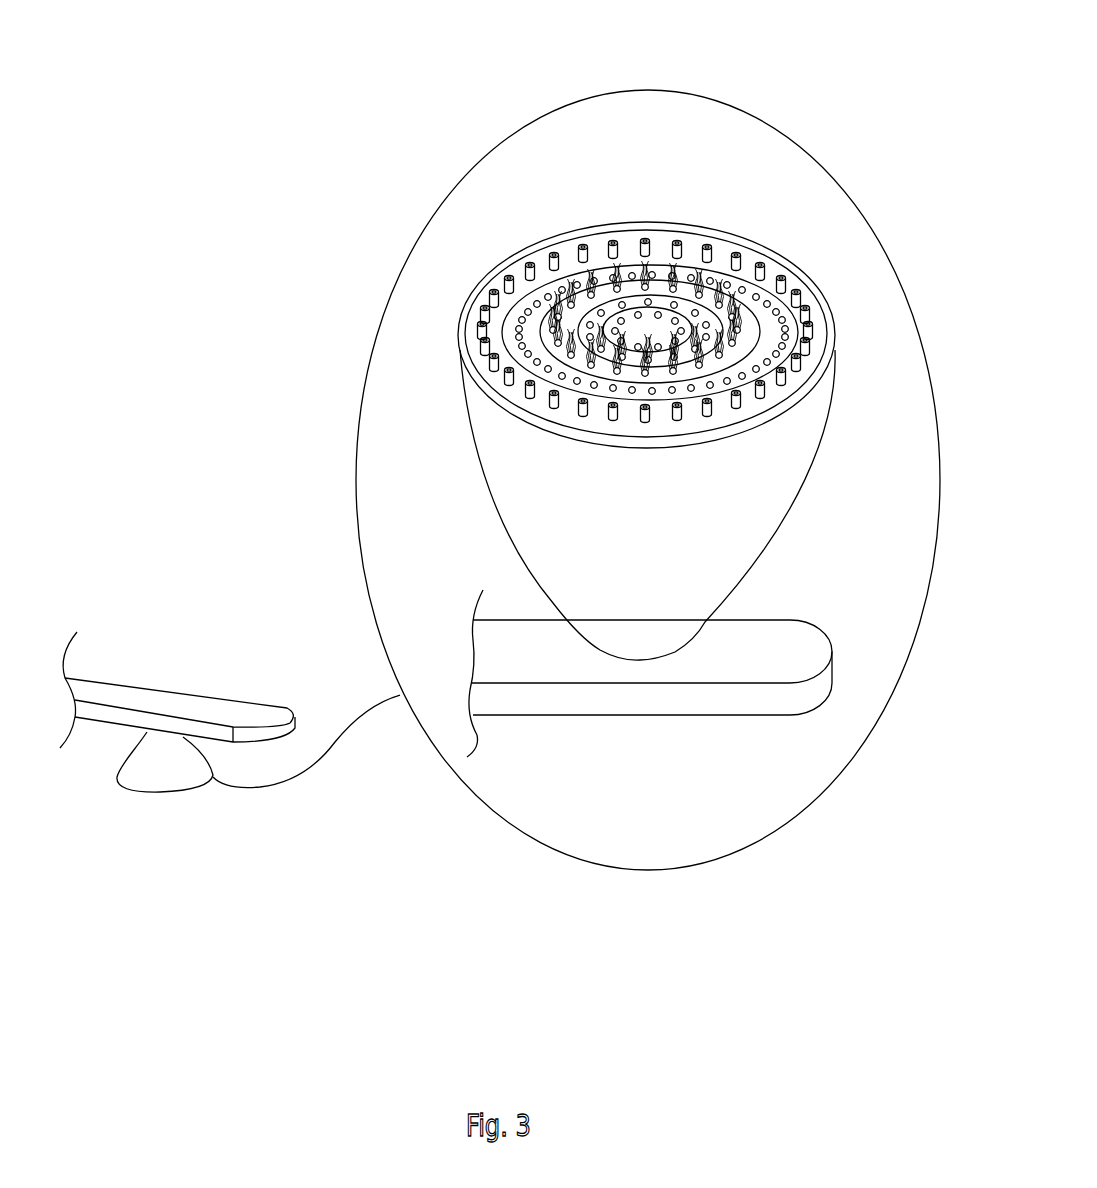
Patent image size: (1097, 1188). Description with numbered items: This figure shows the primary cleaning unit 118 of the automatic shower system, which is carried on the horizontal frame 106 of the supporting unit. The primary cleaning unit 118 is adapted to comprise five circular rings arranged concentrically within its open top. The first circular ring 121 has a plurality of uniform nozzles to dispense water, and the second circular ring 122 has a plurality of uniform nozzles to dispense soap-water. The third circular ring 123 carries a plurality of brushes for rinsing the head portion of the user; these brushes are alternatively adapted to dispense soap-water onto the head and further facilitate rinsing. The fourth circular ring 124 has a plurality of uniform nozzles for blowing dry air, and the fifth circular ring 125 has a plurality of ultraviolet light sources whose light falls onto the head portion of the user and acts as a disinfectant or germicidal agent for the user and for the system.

The horizontal frame 106 is at (638, 700).
The primary cleaning unit 118 is at (520, 517).
The first circular ring 121 is at (572, 408).
The second circular ring 122 is at (530, 354).
The third circular ring 123 is at (553, 329).
The fourth circular ring 124 is at (600, 317).
The fifth circular ring 125 is at (658, 315).